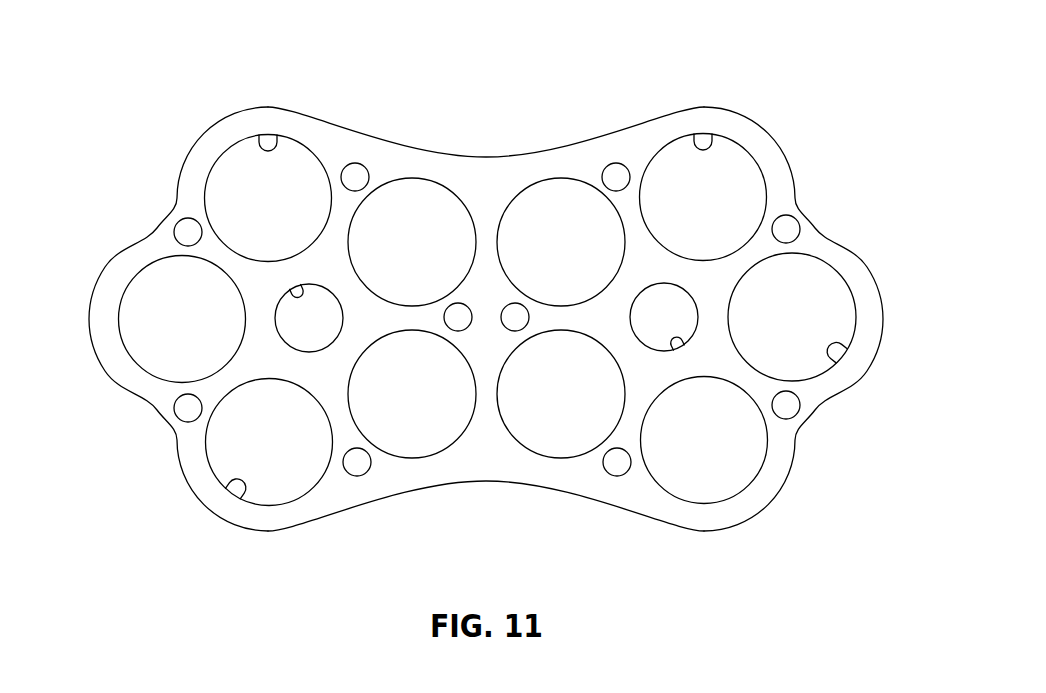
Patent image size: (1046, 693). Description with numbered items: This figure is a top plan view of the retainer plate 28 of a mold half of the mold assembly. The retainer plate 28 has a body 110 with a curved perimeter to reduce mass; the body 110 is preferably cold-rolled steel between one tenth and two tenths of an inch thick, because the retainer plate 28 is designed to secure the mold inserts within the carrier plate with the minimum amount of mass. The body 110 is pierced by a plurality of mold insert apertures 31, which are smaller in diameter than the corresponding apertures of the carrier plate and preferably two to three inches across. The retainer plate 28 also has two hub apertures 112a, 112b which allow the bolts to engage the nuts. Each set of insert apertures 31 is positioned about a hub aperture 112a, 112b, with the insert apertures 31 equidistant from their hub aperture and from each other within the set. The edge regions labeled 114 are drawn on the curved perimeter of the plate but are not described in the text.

The retainer plate 28 is at (495, 307).
The body 110 is at (187, 180).
The hub aperture 112a is at (677, 290).
The hub aperture 112b is at (297, 345).
The concave edge 114 is at (497, 132).
The mold insert apertures 31 is at (257, 136).